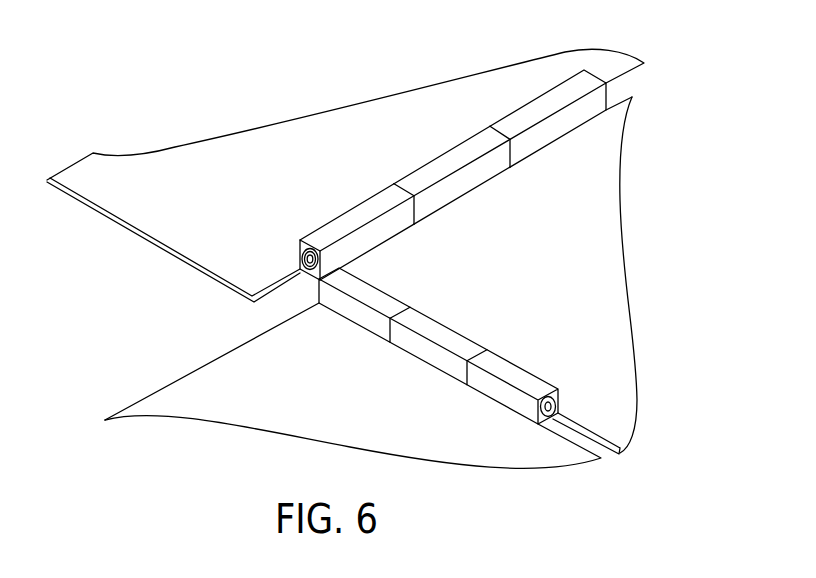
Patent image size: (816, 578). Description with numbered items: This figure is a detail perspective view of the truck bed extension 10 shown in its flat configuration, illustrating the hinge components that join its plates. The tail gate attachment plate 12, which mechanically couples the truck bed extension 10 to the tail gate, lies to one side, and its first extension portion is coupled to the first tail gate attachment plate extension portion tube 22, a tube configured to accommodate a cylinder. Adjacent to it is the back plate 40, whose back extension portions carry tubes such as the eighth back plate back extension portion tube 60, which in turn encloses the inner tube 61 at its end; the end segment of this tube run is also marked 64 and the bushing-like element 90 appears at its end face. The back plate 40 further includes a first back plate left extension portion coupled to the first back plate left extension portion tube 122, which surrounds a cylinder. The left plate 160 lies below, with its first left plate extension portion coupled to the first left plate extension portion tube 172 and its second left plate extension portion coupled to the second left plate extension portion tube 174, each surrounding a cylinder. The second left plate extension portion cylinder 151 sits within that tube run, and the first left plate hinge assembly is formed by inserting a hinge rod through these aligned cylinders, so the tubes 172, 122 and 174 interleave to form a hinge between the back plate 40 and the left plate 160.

The truck bed extension 10 is at (322, 94).
The tail gate attachment plate 12 is at (326, 173).
The first tail gate attachment plate extension portion tube 22 is at (460, 190).
The back plate 40 is at (556, 266).
The eighth back plate back extension portion tube 60 is at (332, 224).
The eighth back plate back extension portion tube 61 is at (300, 240).
The beam end segment 64 is at (558, 95).
The bushing 90 is at (301, 256).
The first back plate left extension portion tube 122 is at (440, 353).
The second left plate extension portion cylinder 151 is at (535, 421).
The left plate 160 is at (326, 416).
The first left plate extension portion tube 172 is at (373, 315).
The second left plate extension portion tube 174 is at (512, 395).